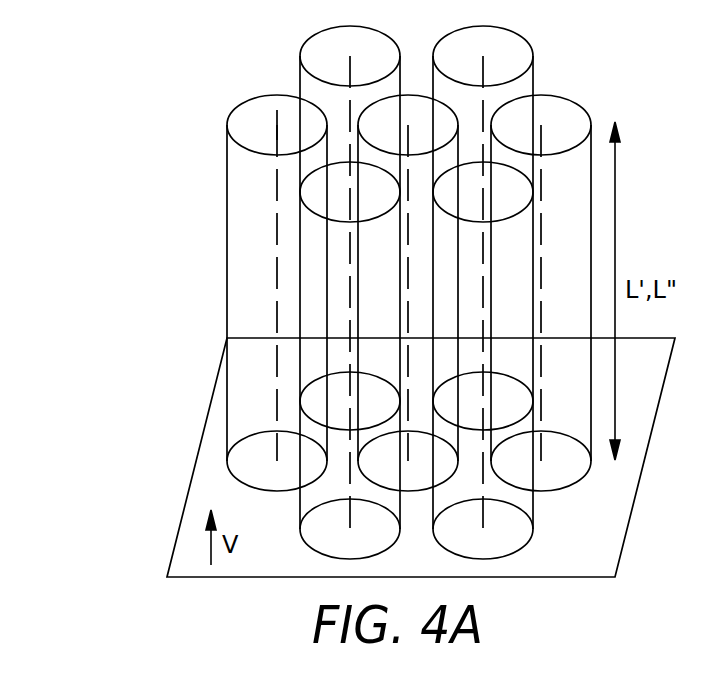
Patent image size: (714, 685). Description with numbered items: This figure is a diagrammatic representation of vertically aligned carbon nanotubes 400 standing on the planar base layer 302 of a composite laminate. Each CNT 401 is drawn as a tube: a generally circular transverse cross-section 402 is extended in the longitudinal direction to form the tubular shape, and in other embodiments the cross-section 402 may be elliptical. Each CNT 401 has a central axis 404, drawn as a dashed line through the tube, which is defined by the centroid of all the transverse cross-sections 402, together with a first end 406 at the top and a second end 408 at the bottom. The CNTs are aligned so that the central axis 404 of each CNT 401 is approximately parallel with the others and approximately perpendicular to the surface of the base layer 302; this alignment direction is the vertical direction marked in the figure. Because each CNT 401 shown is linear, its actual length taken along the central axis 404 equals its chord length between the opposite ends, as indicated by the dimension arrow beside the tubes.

The vertically aligned carbon nanotubes 400 is at (317, 280).
The carbon nanotube 401 is at (208, 252).
The transverse cross-section 402 is at (240, 100).
The central axis 404 is at (275, 237).
The first end 406 is at (276, 117).
The second end 408 is at (277, 490).
The base layer 302 is at (212, 465).